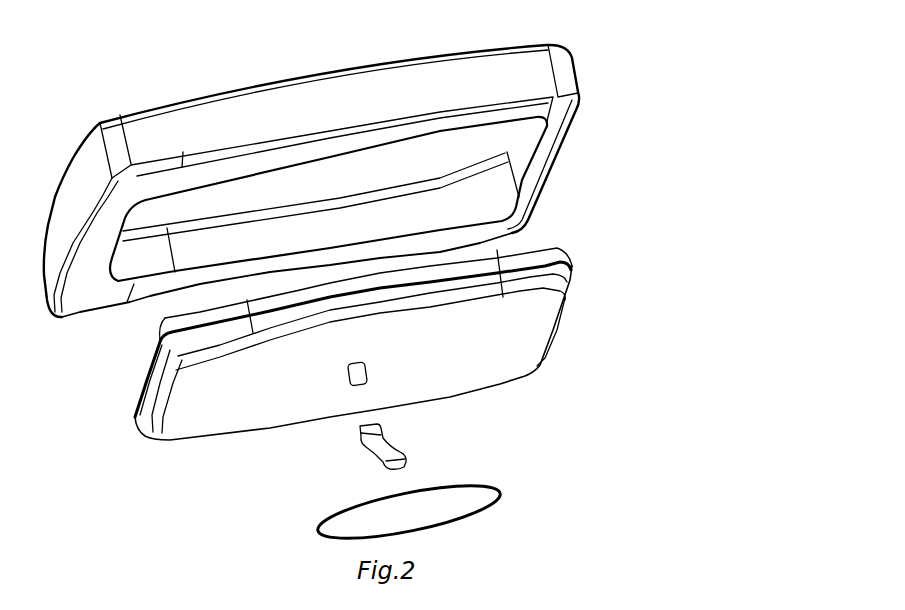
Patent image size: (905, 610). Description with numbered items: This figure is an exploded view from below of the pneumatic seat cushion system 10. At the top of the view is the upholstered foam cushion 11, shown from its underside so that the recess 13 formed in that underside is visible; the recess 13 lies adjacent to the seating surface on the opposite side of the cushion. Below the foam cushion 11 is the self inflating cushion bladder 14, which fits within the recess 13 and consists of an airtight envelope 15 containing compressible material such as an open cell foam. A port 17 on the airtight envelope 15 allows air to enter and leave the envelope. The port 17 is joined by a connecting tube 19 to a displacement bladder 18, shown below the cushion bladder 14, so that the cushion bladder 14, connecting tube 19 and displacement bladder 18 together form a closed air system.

The pneumatic seat cushion system 10 is at (678, 96).
The foam cushion 11 is at (152, 126).
The recess 13 is at (315, 197).
The self inflating cushion bladder 14 is at (240, 403).
The airtight envelope 15 is at (547, 250).
The port 17 is at (370, 372).
The displacement bladder 18 is at (443, 508).
The connecting tube 19 is at (400, 442).